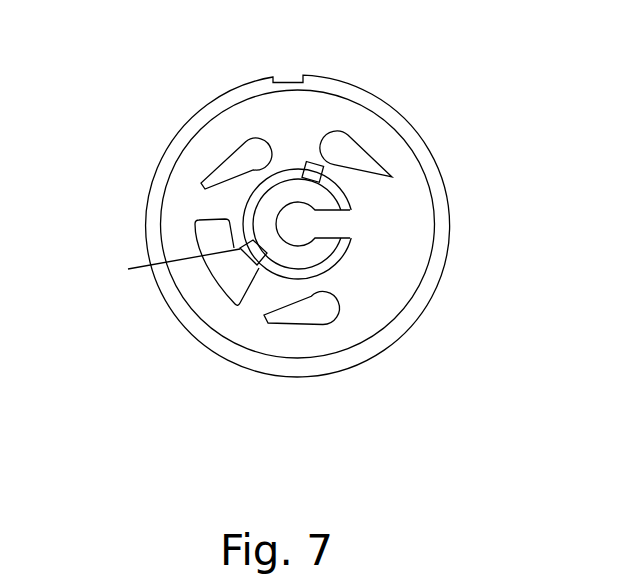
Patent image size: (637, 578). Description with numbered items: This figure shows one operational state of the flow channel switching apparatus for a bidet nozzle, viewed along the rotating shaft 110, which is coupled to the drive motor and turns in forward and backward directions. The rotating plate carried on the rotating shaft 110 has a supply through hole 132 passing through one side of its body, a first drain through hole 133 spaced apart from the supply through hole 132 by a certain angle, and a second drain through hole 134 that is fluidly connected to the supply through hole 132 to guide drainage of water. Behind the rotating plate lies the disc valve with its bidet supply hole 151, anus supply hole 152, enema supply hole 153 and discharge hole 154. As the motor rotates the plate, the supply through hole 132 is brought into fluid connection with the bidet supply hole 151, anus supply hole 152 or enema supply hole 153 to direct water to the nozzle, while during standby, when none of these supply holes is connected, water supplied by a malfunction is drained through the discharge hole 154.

The rotating shaft 110 is at (298, 224).
The supply through hole 132 is at (232, 286).
The first drain through hole 133 is at (306, 163).
The second drain through hole 134 is at (262, 268).
The bidet supply hole 151 is at (248, 150).
The anus supply hole 152 is at (353, 157).
The enema supply hole 153 is at (313, 310).
The discharge hole 154 is at (117, 268).